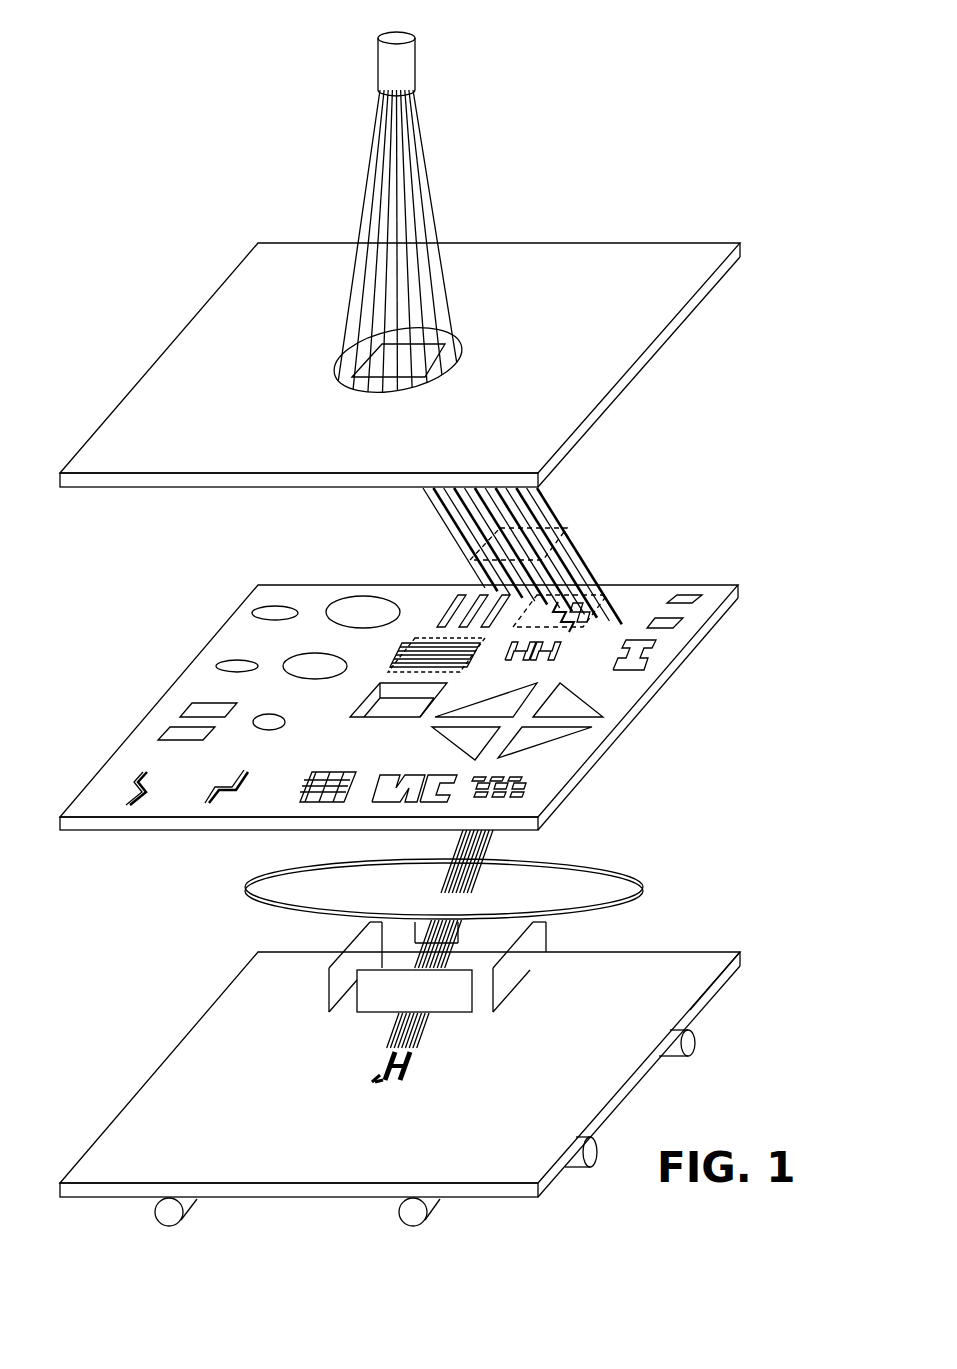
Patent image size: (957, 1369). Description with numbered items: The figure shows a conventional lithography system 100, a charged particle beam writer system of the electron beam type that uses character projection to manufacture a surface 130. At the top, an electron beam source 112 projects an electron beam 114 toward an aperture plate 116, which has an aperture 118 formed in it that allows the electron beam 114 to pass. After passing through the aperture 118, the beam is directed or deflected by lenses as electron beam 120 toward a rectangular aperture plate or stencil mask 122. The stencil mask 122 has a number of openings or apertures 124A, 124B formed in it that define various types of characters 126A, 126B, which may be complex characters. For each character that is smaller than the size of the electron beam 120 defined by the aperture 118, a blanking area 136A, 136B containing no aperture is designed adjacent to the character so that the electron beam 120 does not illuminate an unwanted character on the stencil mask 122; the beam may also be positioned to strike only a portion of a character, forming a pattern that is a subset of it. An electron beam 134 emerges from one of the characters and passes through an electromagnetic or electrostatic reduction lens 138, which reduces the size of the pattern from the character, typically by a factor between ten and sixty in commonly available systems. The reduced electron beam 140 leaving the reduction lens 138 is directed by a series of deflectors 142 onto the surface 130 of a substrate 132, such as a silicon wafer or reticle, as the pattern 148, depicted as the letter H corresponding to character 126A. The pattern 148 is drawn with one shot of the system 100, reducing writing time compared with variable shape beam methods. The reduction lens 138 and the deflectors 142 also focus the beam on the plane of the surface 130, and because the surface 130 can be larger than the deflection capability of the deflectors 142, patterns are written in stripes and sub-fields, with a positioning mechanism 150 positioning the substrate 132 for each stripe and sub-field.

The lithography system 100 is at (142, 103).
The electron beam source 112 is at (407, 64).
The electron beam 114 is at (423, 170).
The aperture plate 116 is at (608, 403).
The aperture 118 is at (425, 367).
The electron beam 120 is at (578, 520).
The stencil mask 122 is at (607, 742).
The apertures 124A is at (553, 743).
The apertures 124B is at (168, 747).
The character 126A is at (603, 610).
The character 126B is at (353, 598).
The surface 130 is at (242, 1052).
The substrate 132 is at (690, 1012).
The electron beam 134 is at (493, 847).
The blanking area 136A is at (247, 790).
The blanking area 136B is at (223, 687).
The reduction lens 138 is at (643, 890).
The reduced electron beam 140 is at (448, 955).
The deflectors 142 is at (328, 990).
The pattern 148 is at (400, 1068).
The positioning mechanism 150 is at (183, 1213).